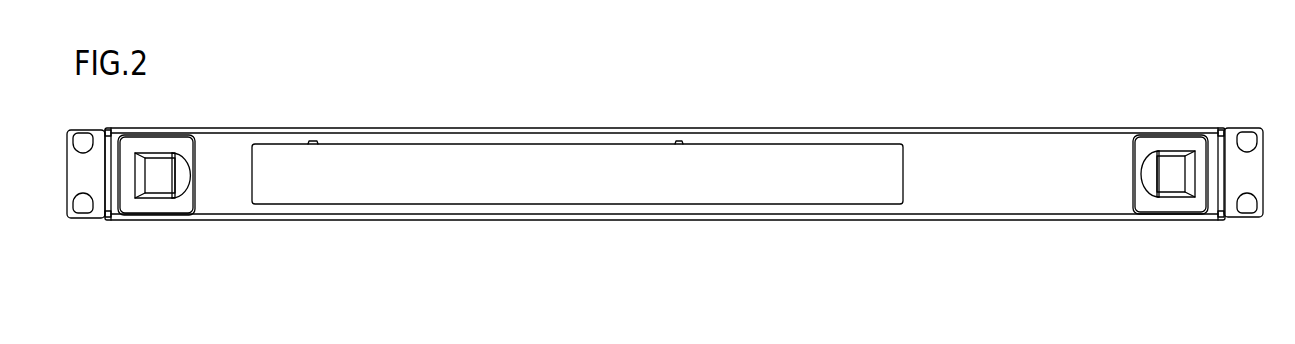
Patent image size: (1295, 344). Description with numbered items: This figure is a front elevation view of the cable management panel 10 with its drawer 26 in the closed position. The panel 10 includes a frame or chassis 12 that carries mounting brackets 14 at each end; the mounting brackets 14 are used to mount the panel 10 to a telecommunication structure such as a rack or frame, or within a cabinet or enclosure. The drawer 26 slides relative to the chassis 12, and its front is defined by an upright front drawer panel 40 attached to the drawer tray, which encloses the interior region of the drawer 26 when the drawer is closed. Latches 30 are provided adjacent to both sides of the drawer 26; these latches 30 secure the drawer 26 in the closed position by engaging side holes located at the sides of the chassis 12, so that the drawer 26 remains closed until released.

The cable management panel 10 is at (300, 113).
The chassis 12 is at (672, 240).
The mounting brackets 14 is at (95, 218).
The drawer 26 is at (992, 188).
The latches 30 is at (173, 207).
The upright front drawer panel 40 is at (597, 188).